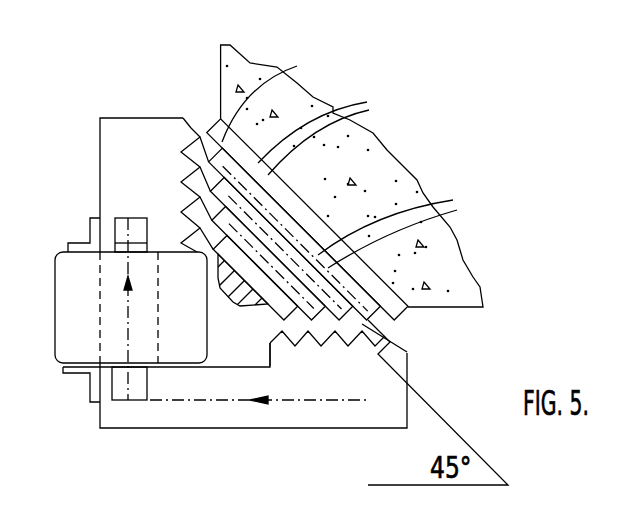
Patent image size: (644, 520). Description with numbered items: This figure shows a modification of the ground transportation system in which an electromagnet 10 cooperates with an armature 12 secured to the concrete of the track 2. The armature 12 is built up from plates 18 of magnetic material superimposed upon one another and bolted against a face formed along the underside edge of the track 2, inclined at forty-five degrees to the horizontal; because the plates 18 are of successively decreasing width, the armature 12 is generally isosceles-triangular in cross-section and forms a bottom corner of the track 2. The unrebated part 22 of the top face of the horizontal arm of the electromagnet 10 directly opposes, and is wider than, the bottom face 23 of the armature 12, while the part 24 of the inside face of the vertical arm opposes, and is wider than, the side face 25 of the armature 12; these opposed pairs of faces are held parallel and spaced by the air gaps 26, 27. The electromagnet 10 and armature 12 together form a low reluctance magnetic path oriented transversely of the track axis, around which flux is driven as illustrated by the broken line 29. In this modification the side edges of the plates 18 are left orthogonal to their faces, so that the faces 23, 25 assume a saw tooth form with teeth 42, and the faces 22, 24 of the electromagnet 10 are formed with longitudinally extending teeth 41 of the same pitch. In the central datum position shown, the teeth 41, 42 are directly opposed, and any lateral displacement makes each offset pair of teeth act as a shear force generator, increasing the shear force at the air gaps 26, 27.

The electromagnet 10 is at (165, 430).
The track 2 is at (402, 212).
The armature 12 is at (398, 280).
The plates 18 is at (302, 197).
The unrebated part of the top face of the arm 22 is at (297, 346).
The bottom face of the armature 23 is at (395, 352).
The part of the inside face of the arm 24 is at (192, 130).
The side face of the armature 25 is at (190, 141).
The air gap 26 is at (385, 329).
The air gap 27 is at (203, 135).
The broken line 29 is at (268, 402).
The teeth 41 is at (183, 189).
The teeth 42 is at (352, 153).